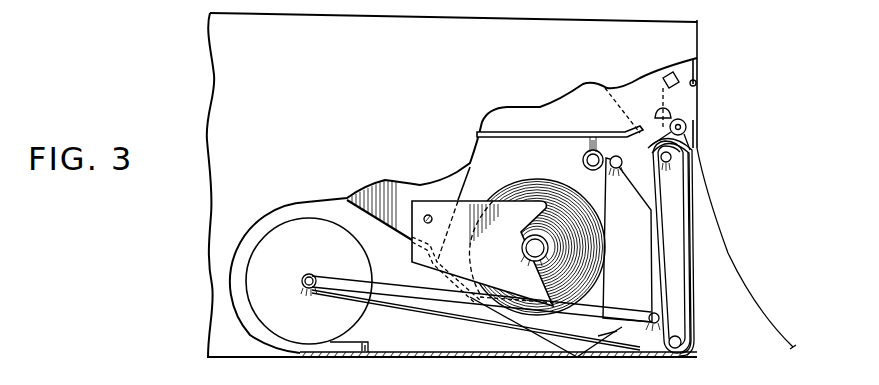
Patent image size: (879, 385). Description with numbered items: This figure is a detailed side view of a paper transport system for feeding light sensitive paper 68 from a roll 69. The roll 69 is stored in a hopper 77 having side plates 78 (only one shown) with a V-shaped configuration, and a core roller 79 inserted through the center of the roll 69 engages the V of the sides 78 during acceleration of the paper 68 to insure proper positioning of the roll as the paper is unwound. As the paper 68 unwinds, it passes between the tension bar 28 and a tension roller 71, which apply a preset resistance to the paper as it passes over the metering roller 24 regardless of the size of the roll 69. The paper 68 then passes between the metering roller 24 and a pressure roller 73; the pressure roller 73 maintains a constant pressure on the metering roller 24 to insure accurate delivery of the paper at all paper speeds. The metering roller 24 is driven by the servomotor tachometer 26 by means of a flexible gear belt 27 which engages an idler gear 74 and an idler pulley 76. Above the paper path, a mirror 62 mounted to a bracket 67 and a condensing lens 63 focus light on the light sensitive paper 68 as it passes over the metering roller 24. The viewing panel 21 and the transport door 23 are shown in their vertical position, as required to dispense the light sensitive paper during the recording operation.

The viewing panel 21 is at (699, 139).
The transport door 23 is at (693, 250).
The metering roller 24 is at (631, 164).
The servomotor tachometer 26 is at (321, 255).
The flexible gear belt 27 is at (689, 306).
The tension bar 28 is at (617, 170).
The mirror 62 is at (666, 85).
The condensing lens 63 is at (657, 114).
The bracket 67 is at (697, 66).
The light sensitive paper 68 is at (730, 254).
The roll 69 is at (524, 181).
The tension roller 71 is at (583, 161).
The pressure roller 73 is at (686, 121).
The idler gear 74 is at (682, 340).
The idler pulley 76 is at (650, 314).
The hopper 77 is at (400, 236).
The side plates 78 is at (425, 258).
The core roller 79 is at (560, 254).